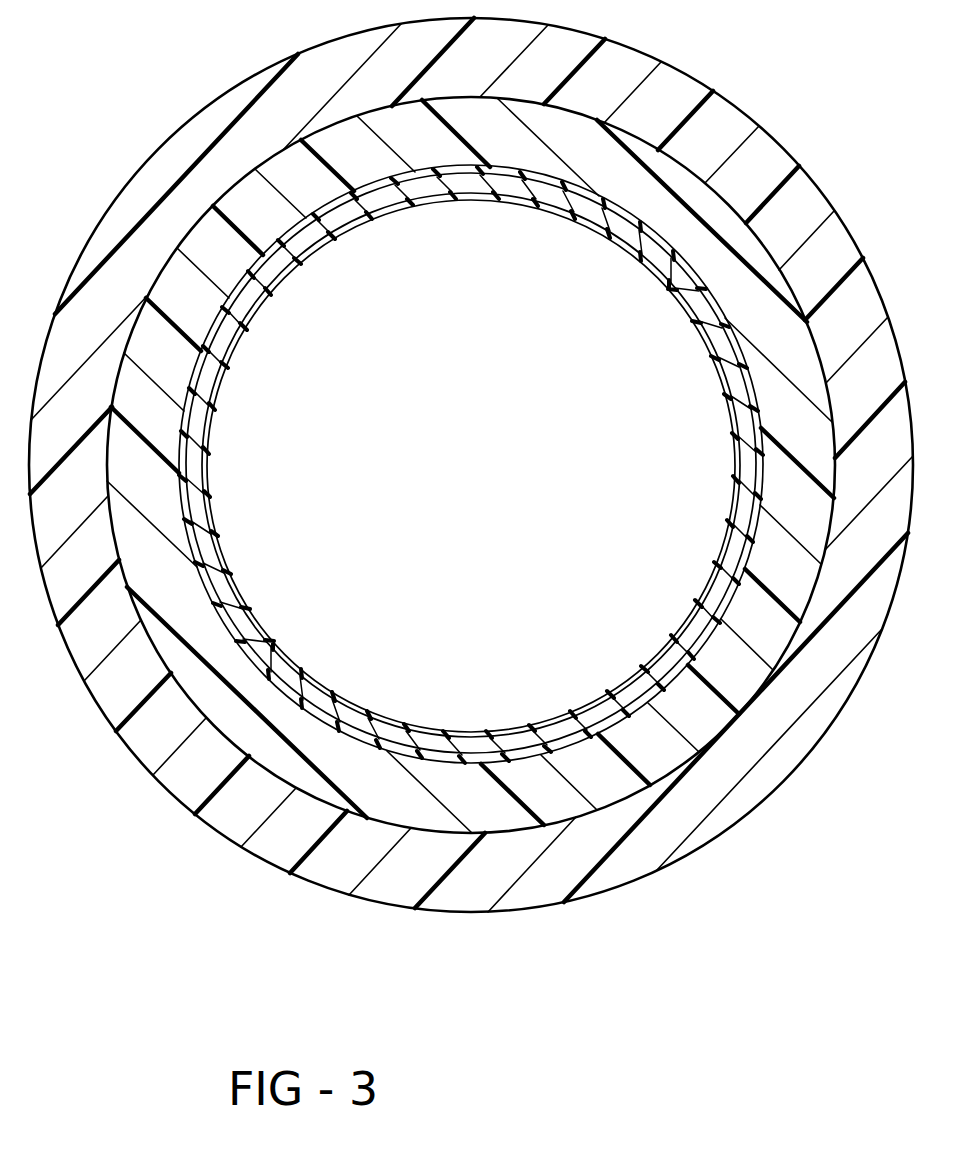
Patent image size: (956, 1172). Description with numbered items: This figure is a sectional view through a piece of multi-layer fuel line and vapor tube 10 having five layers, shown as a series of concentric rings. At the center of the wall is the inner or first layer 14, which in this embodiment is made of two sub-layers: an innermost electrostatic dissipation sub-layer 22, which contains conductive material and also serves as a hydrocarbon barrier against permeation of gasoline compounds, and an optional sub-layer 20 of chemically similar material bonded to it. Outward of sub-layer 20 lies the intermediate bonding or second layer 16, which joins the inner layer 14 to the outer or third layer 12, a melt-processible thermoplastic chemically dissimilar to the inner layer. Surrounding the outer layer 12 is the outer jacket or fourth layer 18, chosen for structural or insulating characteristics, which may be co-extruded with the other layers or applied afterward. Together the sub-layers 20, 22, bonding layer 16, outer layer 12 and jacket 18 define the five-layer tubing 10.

The multi-layer fuel line and vapor tube 10 is at (177, 85).
The outer or third layer 12 is at (737, 230).
The inner or first layer 14 is at (674, 628).
The bonding or second layer 16 is at (770, 285).
The outer jacket or fourth layer 18 is at (733, 123).
The optional sub-layer 20 is at (747, 452).
The electrostatic dissipation sub-layer 22 is at (445, 730).